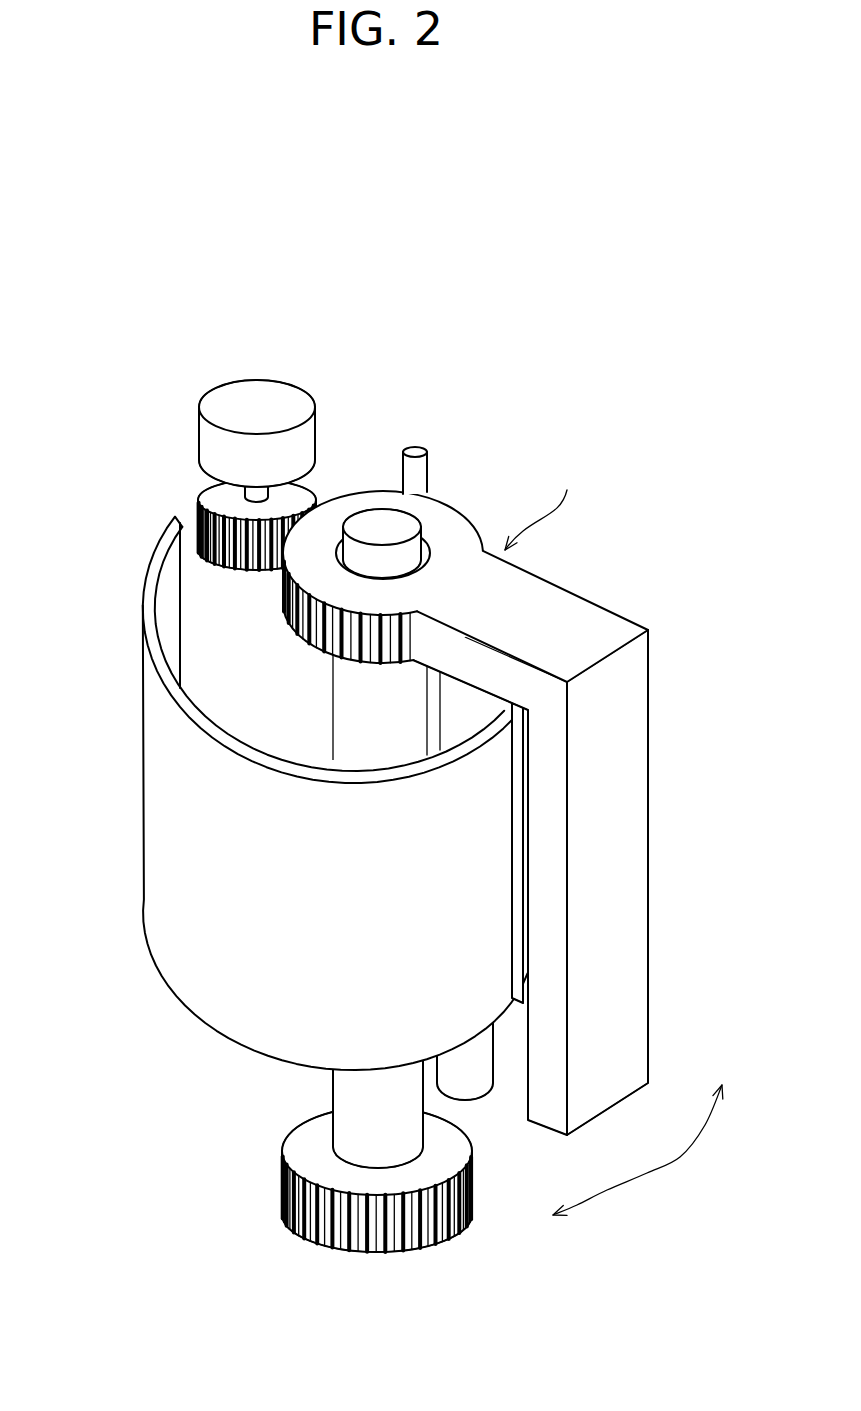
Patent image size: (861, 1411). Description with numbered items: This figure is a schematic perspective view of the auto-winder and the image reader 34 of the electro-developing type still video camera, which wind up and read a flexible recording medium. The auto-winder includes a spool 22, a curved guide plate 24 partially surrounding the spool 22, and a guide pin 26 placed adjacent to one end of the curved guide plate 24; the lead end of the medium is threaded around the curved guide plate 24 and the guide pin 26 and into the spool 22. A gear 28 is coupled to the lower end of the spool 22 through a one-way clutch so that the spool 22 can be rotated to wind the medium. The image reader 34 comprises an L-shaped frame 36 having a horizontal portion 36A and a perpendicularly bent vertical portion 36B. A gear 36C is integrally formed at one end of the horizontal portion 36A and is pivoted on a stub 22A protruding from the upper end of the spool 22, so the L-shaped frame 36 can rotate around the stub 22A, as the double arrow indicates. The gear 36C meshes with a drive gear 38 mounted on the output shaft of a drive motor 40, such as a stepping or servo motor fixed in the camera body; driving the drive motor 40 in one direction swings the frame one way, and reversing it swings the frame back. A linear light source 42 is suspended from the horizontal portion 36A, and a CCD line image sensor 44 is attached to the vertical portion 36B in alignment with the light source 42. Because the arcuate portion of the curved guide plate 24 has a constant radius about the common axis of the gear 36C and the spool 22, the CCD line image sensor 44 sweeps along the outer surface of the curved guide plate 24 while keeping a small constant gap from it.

The spool 22 is at (380, 721).
The stub 22A is at (382, 527).
The curved guide plate 24 is at (200, 843).
The guide pin 26 is at (415, 452).
The gear 28 is at (369, 1230).
The image reader 34 is at (545, 503).
The L-shaped frame 36 is at (444, 729).
The horizontal portion 36A is at (542, 620).
The vertical portion 36B is at (612, 887).
The gear 36C is at (447, 530).
The drive gear 38 is at (218, 502).
The drive motor 40 is at (267, 400).
The linear light source 42 is at (463, 720).
The CCD line image sensor 44 is at (517, 855).